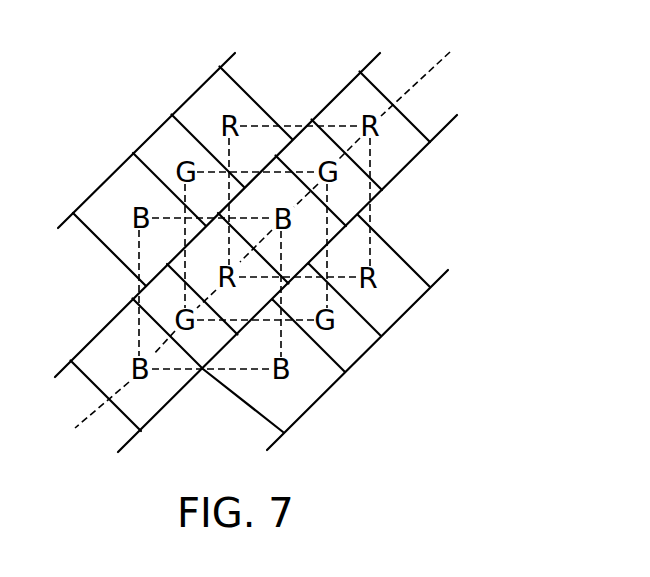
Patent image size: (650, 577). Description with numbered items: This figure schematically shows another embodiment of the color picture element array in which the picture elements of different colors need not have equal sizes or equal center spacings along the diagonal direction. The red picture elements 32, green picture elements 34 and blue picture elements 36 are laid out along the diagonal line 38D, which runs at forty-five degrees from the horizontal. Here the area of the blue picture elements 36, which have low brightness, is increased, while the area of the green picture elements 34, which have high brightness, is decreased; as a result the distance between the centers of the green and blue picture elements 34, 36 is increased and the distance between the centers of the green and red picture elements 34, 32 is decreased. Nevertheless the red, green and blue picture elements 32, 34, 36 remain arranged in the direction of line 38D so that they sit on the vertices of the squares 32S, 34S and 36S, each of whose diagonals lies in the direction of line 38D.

The red picture element 32 is at (195, 101).
The green picture element 34 is at (158, 137).
The blue picture element 36 is at (114, 184).
The square for red picture elements 32S is at (370, 162).
The square for green picture elements 34S is at (327, 232).
The square for blue picture elements 36S is at (141, 288).
The line 38D is at (425, 83).